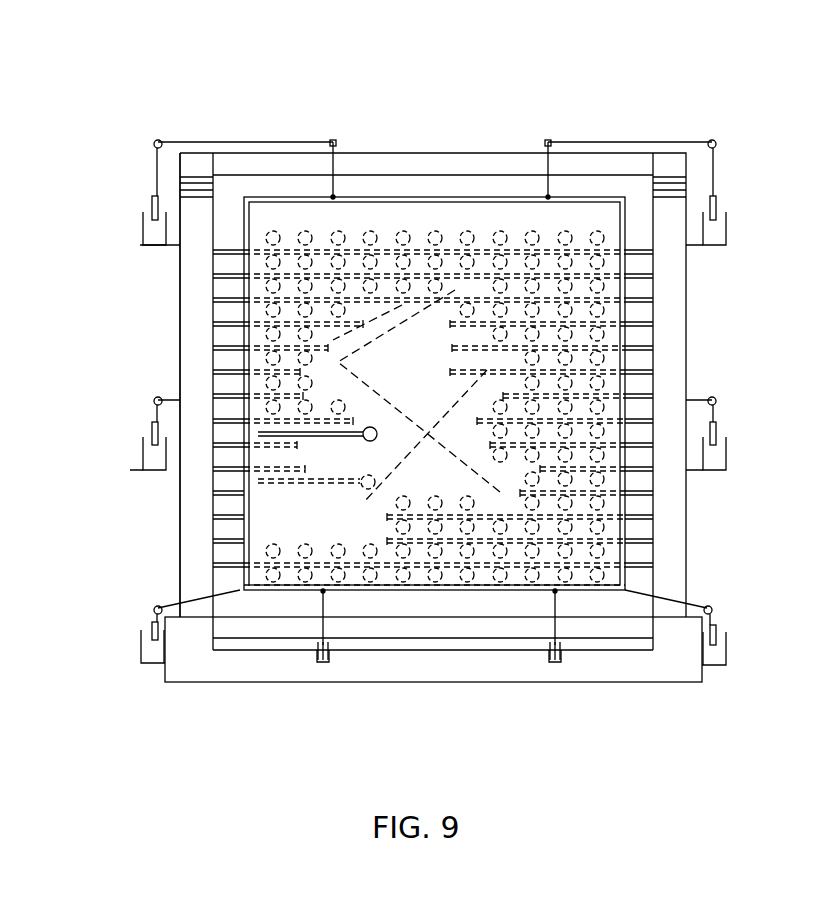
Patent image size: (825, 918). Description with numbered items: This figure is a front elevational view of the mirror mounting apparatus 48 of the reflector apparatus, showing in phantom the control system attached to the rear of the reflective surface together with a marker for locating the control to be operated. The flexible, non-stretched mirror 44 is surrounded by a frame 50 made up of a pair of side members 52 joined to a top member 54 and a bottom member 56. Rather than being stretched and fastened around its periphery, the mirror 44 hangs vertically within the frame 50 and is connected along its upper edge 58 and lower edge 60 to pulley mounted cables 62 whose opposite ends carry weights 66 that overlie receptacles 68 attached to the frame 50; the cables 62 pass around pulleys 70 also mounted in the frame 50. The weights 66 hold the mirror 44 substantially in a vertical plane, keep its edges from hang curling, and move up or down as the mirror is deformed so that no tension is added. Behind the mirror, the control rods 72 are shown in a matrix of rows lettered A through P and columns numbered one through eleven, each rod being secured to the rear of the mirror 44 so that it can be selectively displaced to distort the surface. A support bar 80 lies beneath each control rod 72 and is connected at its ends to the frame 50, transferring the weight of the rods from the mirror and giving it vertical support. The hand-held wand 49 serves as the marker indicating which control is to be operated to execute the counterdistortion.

The flexible mirror 44 is at (250, 502).
The mirror mounting apparatus 48 is at (574, 100).
The hand-held wand 49 is at (350, 440).
The frame 50 is at (160, 292).
The side members 52 is at (180, 338).
The top member 54 is at (398, 153).
The bottom member 56 is at (412, 668).
The upper edge 58 is at (256, 214).
The lower edge 60 is at (240, 578).
The pulley mounted cables 62 is at (215, 142).
The weights 66 is at (150, 206).
The receptacles 68 is at (140, 245).
The pulleys 70 is at (153, 144).
The control rods 72 is at (336, 231).
The support bar 80 is at (381, 250).